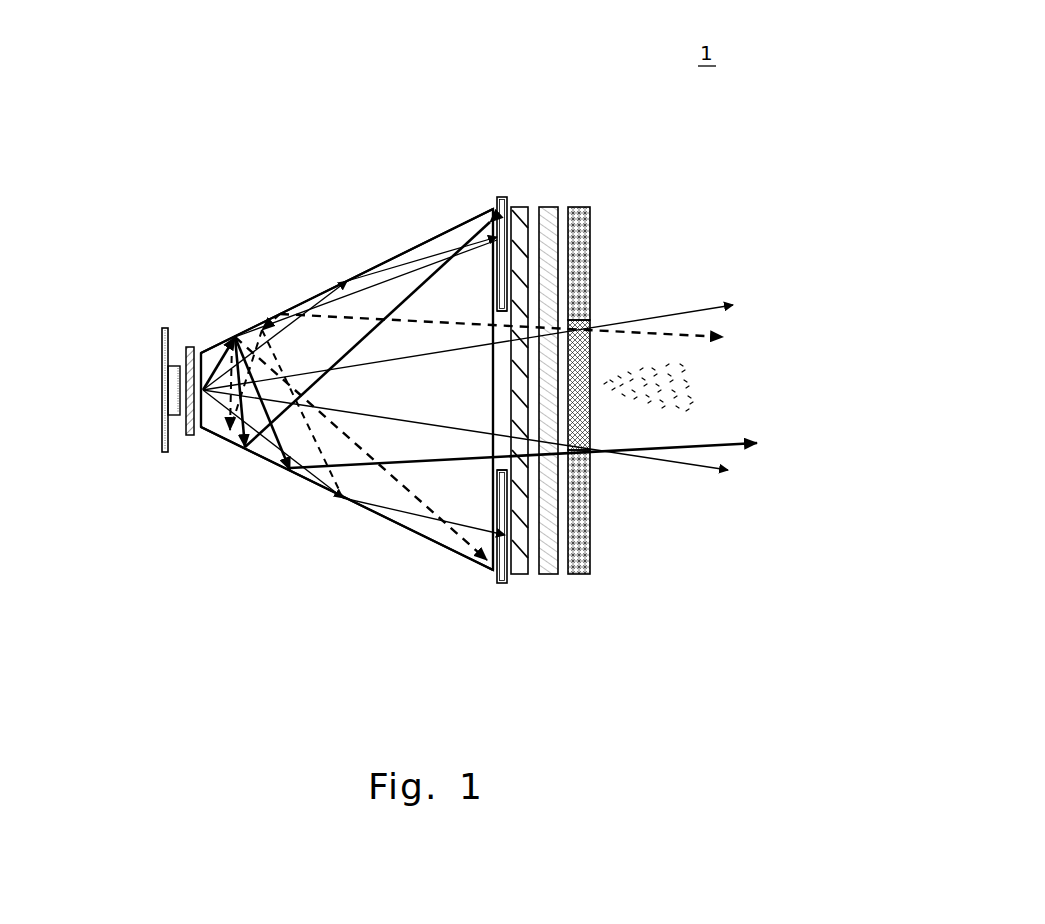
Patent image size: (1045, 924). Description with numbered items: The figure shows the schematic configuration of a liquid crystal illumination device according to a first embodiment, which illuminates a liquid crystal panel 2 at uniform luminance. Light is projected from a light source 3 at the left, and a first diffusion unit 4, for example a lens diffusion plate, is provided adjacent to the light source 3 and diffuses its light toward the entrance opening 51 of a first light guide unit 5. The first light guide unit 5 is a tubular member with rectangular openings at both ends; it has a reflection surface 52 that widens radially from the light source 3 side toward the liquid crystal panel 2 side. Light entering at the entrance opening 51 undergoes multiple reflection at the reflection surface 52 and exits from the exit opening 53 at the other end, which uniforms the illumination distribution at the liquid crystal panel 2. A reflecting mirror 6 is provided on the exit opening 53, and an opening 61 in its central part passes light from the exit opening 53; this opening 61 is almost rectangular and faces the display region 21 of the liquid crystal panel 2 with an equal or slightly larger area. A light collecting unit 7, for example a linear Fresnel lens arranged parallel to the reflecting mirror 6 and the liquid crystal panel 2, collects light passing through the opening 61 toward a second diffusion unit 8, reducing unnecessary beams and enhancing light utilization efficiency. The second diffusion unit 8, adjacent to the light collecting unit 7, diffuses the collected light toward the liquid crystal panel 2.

The liquid crystal panel 2 is at (582, 207).
The display region 21 is at (585, 430).
The light source 3 is at (162, 386).
The first diffusion unit 4 is at (190, 347).
The first light guide unit 5 is at (297, 304).
The entrance opening 51 is at (206, 380).
The reflection surface 52 is at (407, 250).
The exit opening 53 is at (492, 300).
The reflecting mirror 6 is at (502, 196).
The opening 61 is at (503, 363).
The light collecting unit 7 is at (519, 207).
The second diffusion unit 8 is at (548, 207).